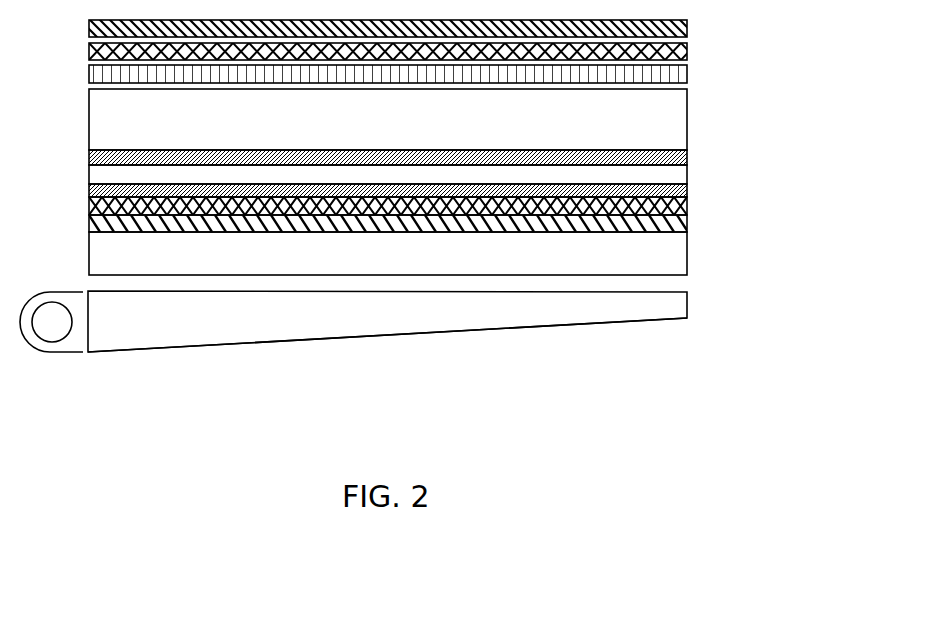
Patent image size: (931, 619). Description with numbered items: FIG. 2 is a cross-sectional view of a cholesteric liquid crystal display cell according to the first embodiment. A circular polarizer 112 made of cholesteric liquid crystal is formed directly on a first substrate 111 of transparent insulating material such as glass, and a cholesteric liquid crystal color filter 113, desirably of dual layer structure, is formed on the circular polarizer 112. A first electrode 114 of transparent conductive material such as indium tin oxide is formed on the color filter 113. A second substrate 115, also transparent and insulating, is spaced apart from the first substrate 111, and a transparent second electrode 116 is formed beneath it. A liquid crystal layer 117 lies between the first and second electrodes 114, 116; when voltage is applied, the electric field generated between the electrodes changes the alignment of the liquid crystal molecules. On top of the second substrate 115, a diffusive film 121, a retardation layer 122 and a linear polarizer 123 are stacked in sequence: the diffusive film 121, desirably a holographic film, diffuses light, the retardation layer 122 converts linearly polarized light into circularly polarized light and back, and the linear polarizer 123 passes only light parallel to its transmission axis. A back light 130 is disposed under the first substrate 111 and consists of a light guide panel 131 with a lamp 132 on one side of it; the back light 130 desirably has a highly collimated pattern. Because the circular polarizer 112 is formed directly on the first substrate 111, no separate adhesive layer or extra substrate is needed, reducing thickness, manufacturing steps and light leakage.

The first substrate 111 is at (667, 262).
The circular polarizer 112 is at (672, 223).
The cholesteric liquid crystal (CLC) color filter 113 is at (688, 212).
The first electrode 114 is at (688, 192).
The second substrate 115 is at (667, 112).
The second electrode 116 is at (688, 155).
The liquid crystal layer 117 is at (667, 177).
The diffusive film 121 is at (689, 70).
The retardation layer 122 is at (689, 50).
The linear polarizer 123 is at (687, 27).
The back light 130 is at (697, 283).
The light guide panel 131 is at (332, 338).
The lamp 132 is at (52, 330).